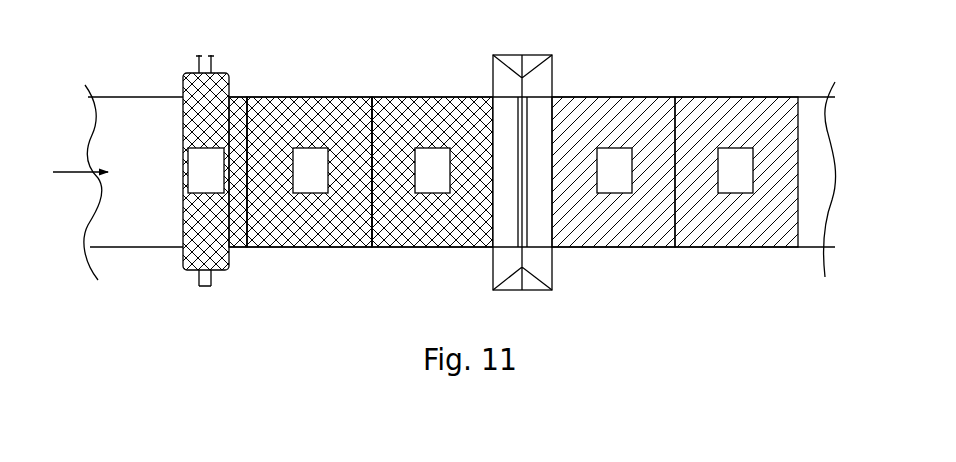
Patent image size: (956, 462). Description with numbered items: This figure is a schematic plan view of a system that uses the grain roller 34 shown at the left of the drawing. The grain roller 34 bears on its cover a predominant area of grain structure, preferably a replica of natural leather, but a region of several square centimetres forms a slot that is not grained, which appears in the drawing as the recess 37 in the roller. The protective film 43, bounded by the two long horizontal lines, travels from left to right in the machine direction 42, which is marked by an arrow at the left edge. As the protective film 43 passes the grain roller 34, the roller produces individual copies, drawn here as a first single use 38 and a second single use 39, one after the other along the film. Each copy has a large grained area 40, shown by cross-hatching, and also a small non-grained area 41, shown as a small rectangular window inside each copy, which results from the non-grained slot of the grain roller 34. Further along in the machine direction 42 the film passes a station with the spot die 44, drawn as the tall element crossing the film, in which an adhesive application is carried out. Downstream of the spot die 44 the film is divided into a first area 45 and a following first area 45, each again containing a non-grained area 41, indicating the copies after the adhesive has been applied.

The grain roller 34 is at (232, 66).
The recess 37 is at (212, 158).
The single use 38 is at (333, 117).
The single use 39 is at (442, 117).
The grained areas 40 is at (311, 232).
The non-grained area 41 is at (321, 181).
The machine direction 42 is at (73, 165).
The protective film 43 is at (115, 104).
The spot die 44 is at (545, 83).
The first area 45 is at (646, 232).